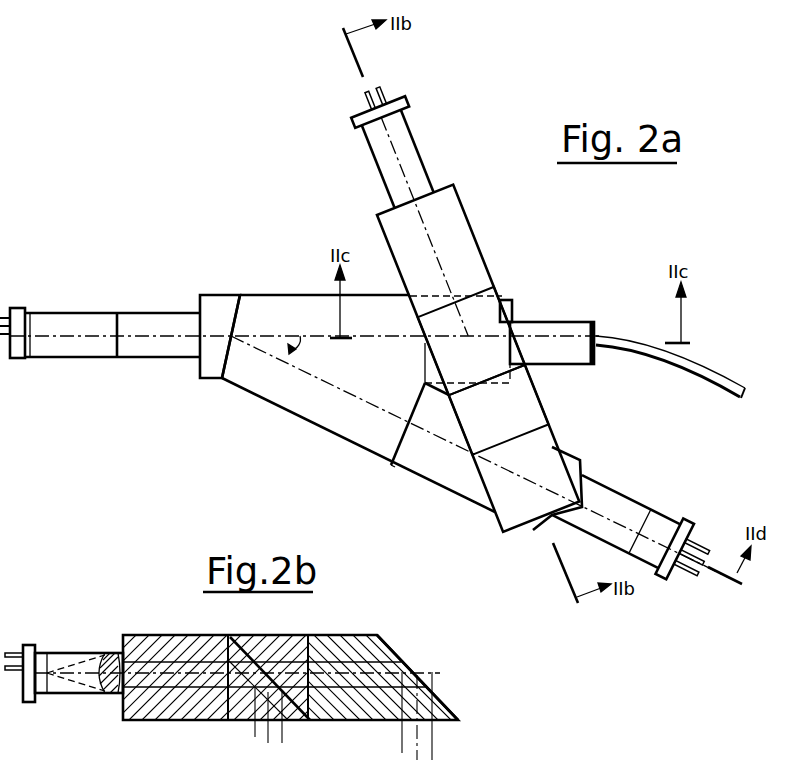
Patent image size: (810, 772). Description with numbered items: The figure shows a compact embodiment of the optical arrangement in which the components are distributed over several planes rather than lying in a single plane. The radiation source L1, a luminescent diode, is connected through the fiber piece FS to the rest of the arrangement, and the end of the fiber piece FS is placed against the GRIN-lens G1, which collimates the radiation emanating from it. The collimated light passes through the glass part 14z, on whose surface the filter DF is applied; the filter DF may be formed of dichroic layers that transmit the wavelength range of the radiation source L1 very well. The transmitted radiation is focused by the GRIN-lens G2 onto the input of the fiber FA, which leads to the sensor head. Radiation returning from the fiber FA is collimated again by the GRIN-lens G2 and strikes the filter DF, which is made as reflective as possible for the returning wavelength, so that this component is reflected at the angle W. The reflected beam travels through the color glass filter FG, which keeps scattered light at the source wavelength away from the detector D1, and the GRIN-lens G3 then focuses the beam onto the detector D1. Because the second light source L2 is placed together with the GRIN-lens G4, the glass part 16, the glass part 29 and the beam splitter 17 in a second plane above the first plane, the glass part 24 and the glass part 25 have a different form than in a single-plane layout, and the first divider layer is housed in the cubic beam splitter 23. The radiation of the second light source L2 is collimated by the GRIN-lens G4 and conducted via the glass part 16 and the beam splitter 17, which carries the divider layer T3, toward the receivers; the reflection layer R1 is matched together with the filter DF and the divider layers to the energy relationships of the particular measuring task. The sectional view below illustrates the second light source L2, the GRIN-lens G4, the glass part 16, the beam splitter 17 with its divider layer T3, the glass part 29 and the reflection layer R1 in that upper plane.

In FIG. 2a, the radiation source L1 is at (28, 316).
In FIG. 2a, the fiber piece FS is at (65, 340).
In FIG. 2a, the GRIN-lens G1 is at (145, 343).
In FIG. 2a, the glass part 14z is at (218, 305).
In FIG. 2a, the filter DF is at (254, 312).
In FIG. 2a, the angle W is at (305, 340).
In FIG. 2a, the glass part 24 is at (308, 401).
In FIG. 2a, the color glass filter FG is at (433, 453).
In FIG. 2a, the glass part 25 is at (480, 480).
In FIG. 2a, the cubic beam splitter 23 is at (513, 307).
In FIG. 2a, the GRIN-lens G2 is at (548, 330).
In FIG. 2a, the fiber FA is at (675, 358).
In FIG. 2a, the glass part 16 is at (458, 242).
In FIG. 2b, the glass part 16 is at (167, 647).
In FIG. 2a, the GRIN-lens G4 is at (407, 157).
In FIG. 2b, the GRIN-lens G4 is at (92, 655).
In FIG. 2a, the second light source L2 is at (397, 117).
In FIG. 2b, the second light source L2 is at (38, 655).
In FIG. 2a, the beam splitter 17 is at (487, 313).
In FIG. 2b, the beam splitter 17 is at (240, 707).
In FIG. 2a, the glass part 29 is at (527, 405).
In FIG. 2b, the glass part 29 is at (352, 703).
In FIG. 2a, the reflection layer R1 is at (548, 457).
In FIG. 2b, the reflection layer R1 is at (417, 683).
In FIG. 2a, the GRIN-lens G3 is at (617, 508).
In FIG. 2a, the detector D1 is at (652, 552).
In FIG. 2b, the divider layer T3 is at (292, 722).